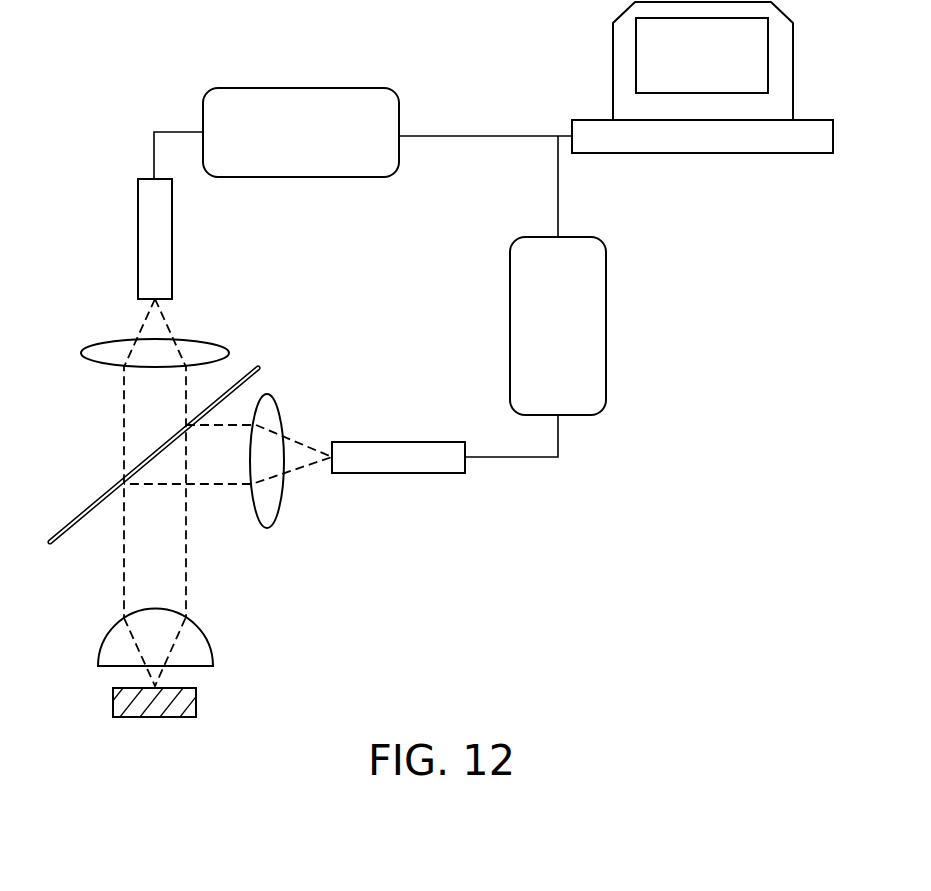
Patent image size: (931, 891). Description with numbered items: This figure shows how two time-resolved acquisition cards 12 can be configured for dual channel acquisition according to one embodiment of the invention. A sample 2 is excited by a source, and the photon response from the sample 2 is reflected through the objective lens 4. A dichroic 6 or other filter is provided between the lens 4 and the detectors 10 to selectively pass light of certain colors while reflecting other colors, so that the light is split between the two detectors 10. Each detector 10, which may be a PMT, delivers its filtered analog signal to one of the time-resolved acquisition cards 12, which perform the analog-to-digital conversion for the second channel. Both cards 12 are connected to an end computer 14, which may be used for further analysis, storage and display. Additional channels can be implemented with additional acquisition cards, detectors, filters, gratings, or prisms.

The sample 2 is at (196, 703).
The objective lens 4 is at (205, 637).
The dichroic 6 is at (83, 510).
The detector 10 is at (172, 240).
The time-resolved acquisition card 12 is at (298, 88).
The end computer 14 is at (793, 68).